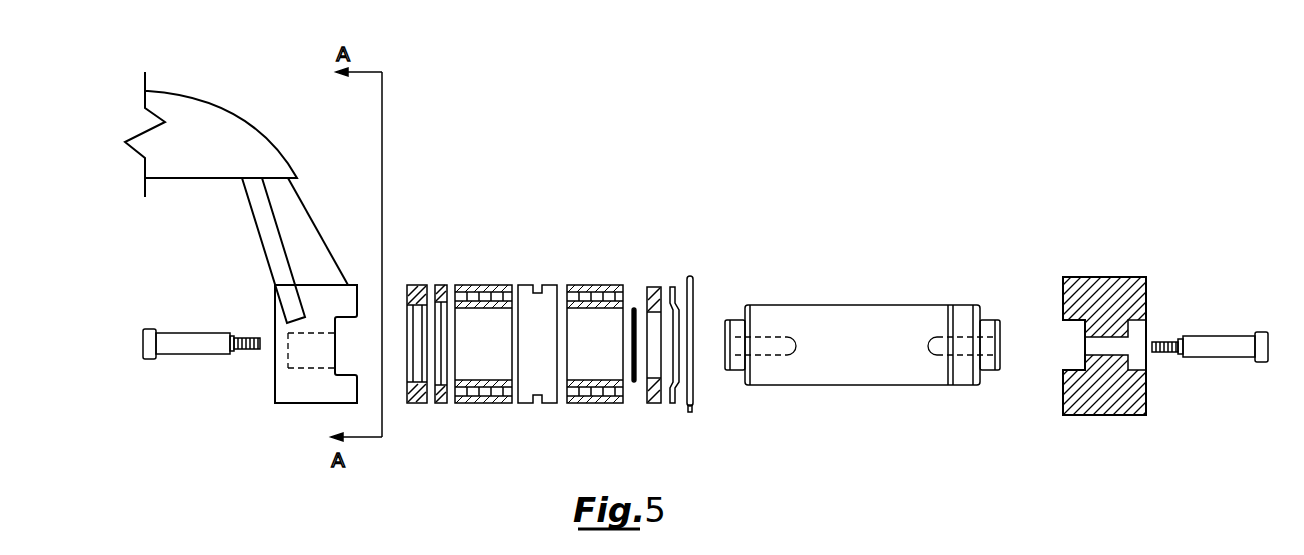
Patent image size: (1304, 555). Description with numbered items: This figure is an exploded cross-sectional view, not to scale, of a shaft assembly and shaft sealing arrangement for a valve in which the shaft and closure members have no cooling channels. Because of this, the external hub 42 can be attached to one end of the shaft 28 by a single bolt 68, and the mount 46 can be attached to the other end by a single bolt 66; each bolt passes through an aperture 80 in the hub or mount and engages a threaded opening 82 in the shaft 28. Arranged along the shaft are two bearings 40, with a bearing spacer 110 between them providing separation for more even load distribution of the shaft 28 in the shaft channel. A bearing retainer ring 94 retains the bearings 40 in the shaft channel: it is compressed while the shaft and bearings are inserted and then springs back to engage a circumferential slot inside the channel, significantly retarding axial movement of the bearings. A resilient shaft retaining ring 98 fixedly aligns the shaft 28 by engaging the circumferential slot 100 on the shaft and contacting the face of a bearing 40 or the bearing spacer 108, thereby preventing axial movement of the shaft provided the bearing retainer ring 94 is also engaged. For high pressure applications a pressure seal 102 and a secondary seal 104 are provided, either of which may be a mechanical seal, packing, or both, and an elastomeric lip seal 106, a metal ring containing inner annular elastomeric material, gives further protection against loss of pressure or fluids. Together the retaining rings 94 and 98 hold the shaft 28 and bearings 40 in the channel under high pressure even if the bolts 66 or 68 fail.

The shaft 28 is at (852, 305).
The bearings 40 is at (483, 283).
The external hub 42 is at (1133, 277).
The mount 46 is at (312, 393).
The bolt 66 is at (187, 333).
The bolt 68 is at (1225, 335).
The apertures 80 is at (297, 348).
The threaded openings 82 is at (770, 355).
The bearing retainer ring 94 is at (695, 273).
The resilient shaft retaining ring 98 is at (634, 383).
The circumferential slot 100 is at (950, 305).
The pressure seal 102 is at (417, 283).
The secondary seal 104 is at (440, 404).
The elastomeric lip seal 106 is at (670, 404).
The bearing spacer 108 is at (653, 285).
The bearing spacer 110 is at (537, 405).